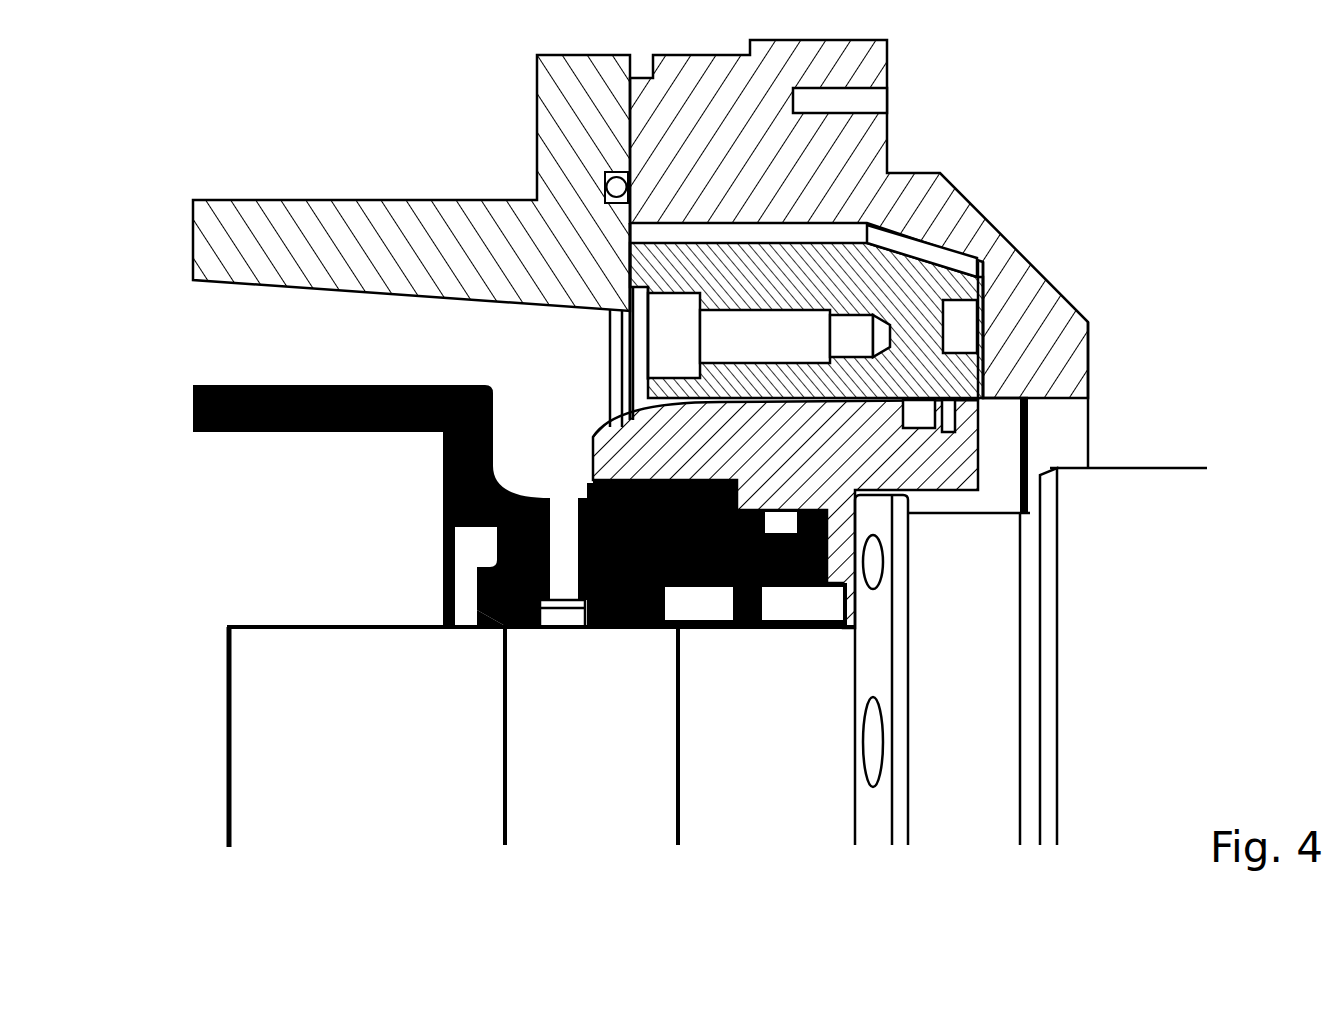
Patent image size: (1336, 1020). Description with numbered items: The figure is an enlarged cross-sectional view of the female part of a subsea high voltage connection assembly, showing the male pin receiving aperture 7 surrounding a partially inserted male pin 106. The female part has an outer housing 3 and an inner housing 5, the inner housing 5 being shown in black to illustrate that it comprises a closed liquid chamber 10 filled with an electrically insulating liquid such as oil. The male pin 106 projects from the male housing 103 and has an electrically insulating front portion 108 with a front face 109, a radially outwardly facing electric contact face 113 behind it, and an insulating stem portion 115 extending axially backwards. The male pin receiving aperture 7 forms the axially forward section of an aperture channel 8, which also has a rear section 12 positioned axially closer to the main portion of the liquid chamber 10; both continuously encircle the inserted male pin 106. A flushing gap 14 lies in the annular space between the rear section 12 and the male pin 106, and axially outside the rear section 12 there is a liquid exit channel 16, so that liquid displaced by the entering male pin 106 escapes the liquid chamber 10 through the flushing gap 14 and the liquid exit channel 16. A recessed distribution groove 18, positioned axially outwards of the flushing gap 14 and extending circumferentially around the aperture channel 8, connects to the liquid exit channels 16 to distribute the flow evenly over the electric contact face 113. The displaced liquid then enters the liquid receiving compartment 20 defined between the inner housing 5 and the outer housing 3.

The outer housing 3 is at (352, 215).
The inner housing 5 is at (240, 386).
The male pin receiving aperture 7 is at (748, 630).
The aperture channel 8 is at (648, 637).
The liquid chamber 10 is at (352, 497).
The rear section 12 is at (532, 630).
The flushing gap 14 is at (523, 630).
The liquid exit channel 16 is at (570, 522).
The distribution groove 18 is at (565, 630).
The liquid receiving compartment 20 is at (372, 353).
The male housing 103 is at (1130, 482).
The male pin 106 is at (263, 626).
The front portion 108 is at (367, 625).
The front face 109 is at (225, 745).
The electric contact face 113 is at (634, 722).
The insulating stem portion 115 is at (825, 708).